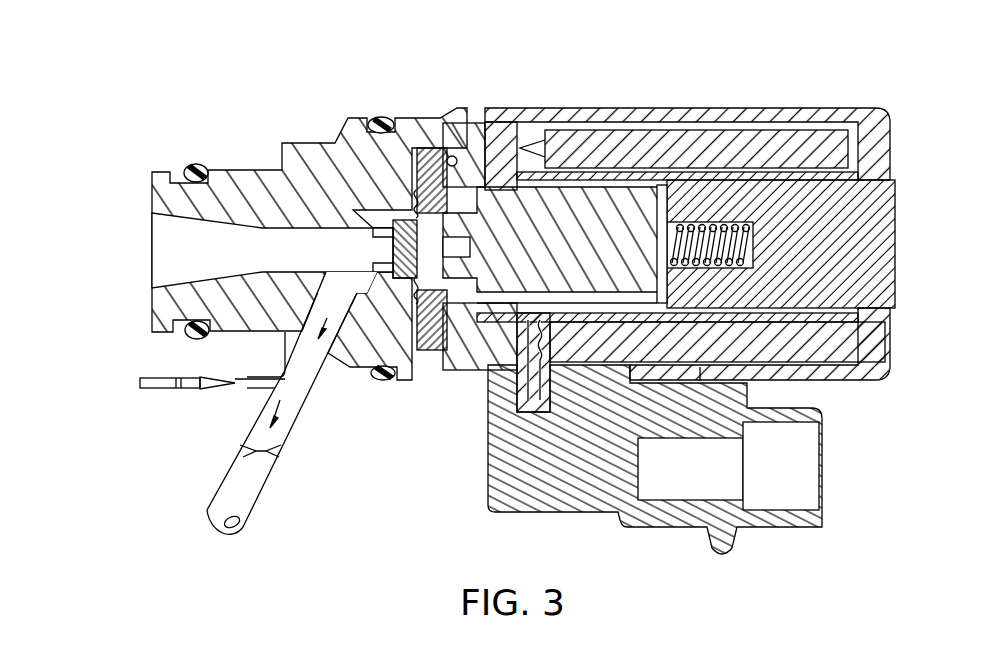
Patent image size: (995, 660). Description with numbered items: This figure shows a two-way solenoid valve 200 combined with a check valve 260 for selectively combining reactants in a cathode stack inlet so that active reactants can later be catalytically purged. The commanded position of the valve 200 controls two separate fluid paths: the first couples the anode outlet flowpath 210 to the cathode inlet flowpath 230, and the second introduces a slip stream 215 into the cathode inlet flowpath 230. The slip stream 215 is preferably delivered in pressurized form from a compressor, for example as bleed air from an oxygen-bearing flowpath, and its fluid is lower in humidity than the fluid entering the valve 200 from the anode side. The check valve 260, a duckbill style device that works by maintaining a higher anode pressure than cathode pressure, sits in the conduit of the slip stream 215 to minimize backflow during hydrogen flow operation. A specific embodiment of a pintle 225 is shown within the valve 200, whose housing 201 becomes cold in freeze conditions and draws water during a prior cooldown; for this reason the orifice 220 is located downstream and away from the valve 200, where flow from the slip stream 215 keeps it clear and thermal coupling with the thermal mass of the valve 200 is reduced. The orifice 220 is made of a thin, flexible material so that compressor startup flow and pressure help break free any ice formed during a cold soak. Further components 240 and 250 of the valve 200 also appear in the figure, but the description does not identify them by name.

The two-way solenoid valve 200 is at (278, 122).
The housing 201 is at (429, 374).
The anode outlet flowpath 210 is at (153, 250).
The slip stream line 215 is at (150, 390).
The orifice 220 is at (241, 448).
The pintle 225 is at (215, 252).
The cathode inlet flowpath 230 is at (255, 494).
The valve pin 240 is at (497, 196).
The solenoid coil 250 is at (668, 129).
The check valve 260 is at (234, 378).